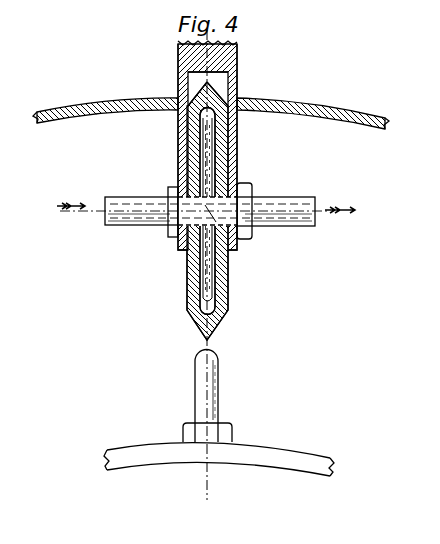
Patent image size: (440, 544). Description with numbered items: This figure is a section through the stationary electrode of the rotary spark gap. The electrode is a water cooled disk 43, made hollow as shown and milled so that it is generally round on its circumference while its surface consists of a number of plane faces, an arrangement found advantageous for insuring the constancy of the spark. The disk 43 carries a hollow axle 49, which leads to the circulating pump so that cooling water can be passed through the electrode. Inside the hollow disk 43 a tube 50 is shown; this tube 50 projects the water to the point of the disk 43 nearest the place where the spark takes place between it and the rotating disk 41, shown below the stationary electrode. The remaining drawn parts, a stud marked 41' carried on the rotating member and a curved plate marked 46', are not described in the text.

The rotating disk 41 is at (219, 441).
The pin stud 41' is at (252, 381).
The water cooled disk 43 is at (189, 272).
The curved plate 46' is at (211, 98).
The hollow axle 49 is at (105, 222).
The tube 50 is at (213, 262).